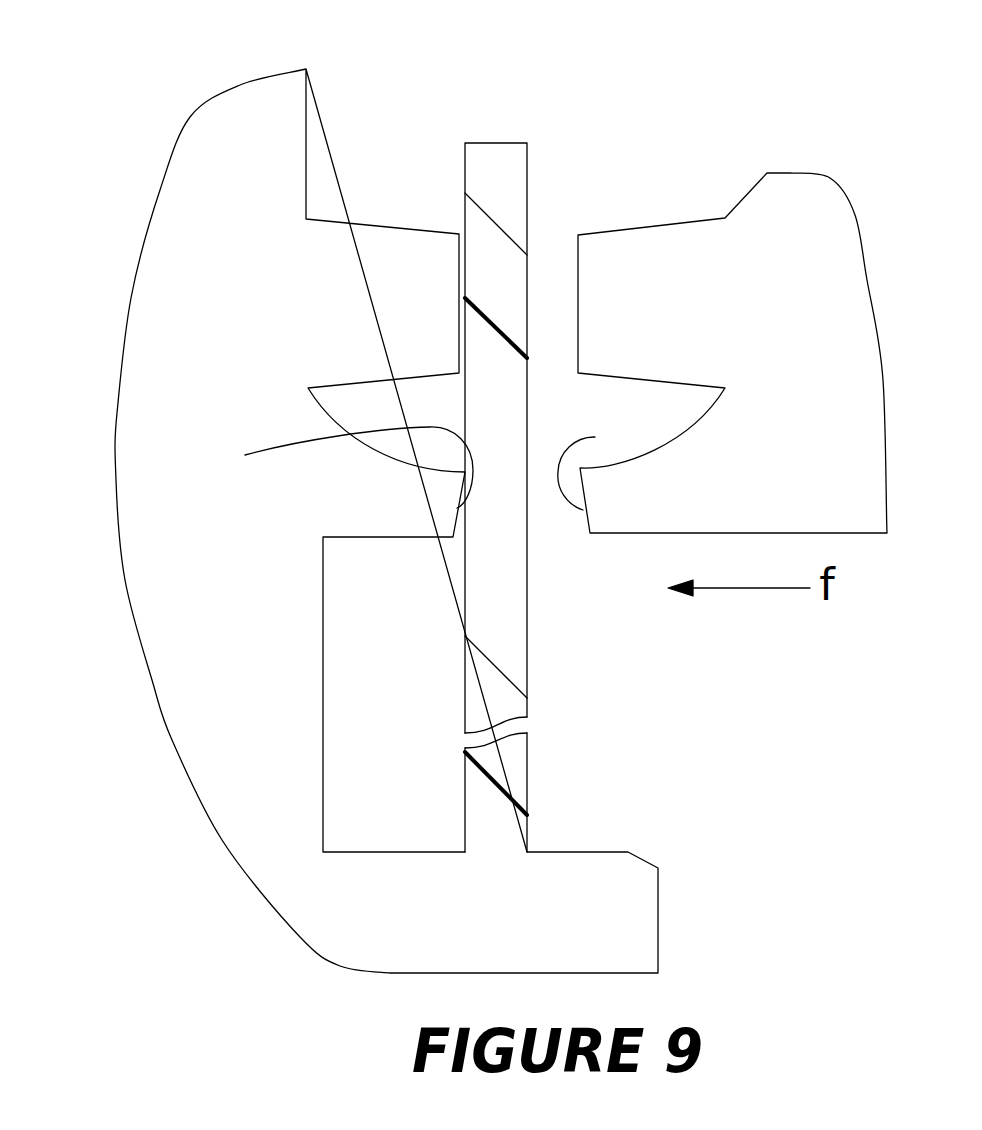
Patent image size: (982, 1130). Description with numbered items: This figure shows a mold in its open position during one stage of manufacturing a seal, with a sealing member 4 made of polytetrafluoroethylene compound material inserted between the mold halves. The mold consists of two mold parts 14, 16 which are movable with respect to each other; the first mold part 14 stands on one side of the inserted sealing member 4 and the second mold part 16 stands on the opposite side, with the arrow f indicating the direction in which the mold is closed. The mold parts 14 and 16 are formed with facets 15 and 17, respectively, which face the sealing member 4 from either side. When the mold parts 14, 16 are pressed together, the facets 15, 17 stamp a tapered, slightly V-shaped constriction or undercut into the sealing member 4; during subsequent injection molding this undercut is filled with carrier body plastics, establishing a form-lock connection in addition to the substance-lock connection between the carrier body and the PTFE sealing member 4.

The mold part 14 is at (243, 116).
The sealing member 4 is at (497, 168).
The mold part 16 is at (785, 208).
The facet 15 is at (245, 455).
The facet 17 is at (595, 437).